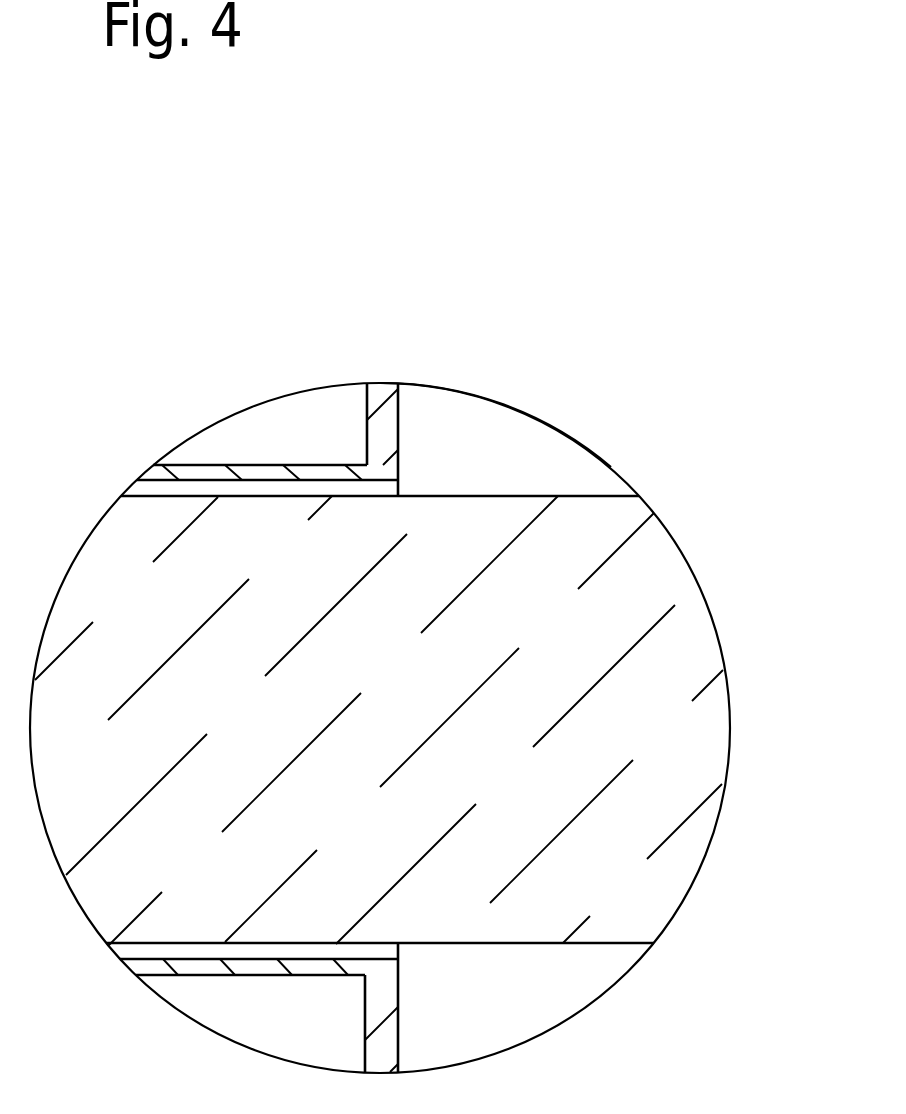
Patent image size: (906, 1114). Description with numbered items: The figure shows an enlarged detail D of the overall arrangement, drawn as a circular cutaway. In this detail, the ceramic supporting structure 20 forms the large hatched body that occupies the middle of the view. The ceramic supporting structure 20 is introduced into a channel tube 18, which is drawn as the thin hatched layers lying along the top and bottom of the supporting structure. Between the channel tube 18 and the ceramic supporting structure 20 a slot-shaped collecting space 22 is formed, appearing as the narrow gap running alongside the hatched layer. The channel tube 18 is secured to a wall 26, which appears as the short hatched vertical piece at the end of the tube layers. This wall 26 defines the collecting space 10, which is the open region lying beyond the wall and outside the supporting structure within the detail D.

The collecting space 10 is at (472, 448).
The detail D is at (611, 467).
The channel tube 18 is at (317, 465).
The ceramic supporting structure 20 is at (573, 658).
The slot-shaped collecting space 22 is at (178, 490).
The wall 26 is at (381, 430).